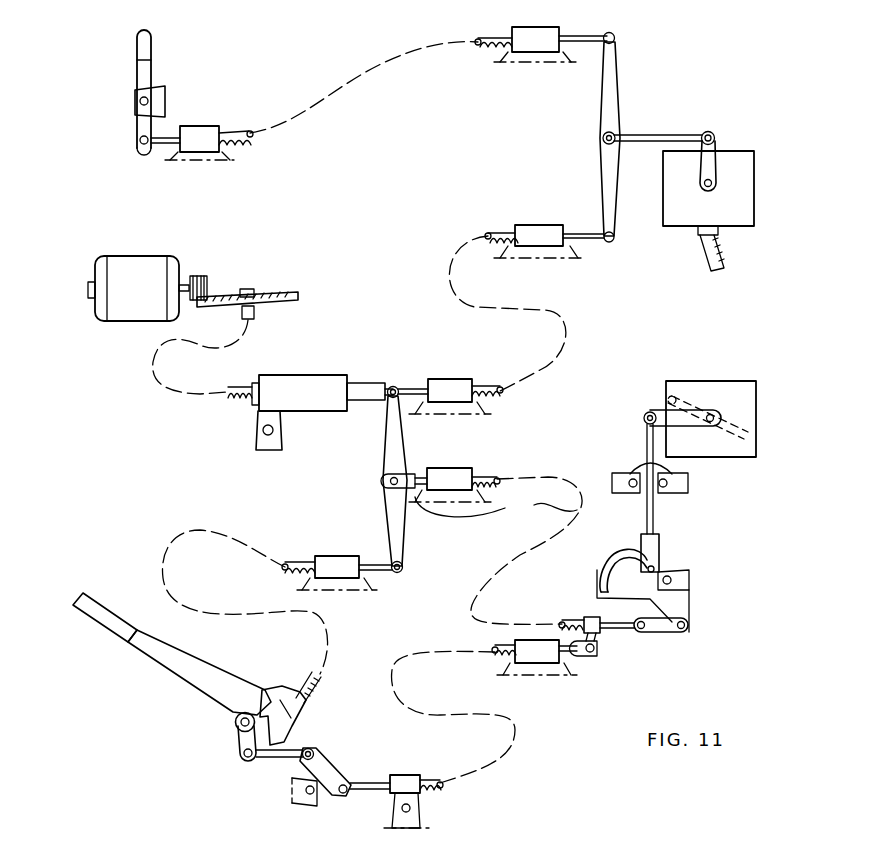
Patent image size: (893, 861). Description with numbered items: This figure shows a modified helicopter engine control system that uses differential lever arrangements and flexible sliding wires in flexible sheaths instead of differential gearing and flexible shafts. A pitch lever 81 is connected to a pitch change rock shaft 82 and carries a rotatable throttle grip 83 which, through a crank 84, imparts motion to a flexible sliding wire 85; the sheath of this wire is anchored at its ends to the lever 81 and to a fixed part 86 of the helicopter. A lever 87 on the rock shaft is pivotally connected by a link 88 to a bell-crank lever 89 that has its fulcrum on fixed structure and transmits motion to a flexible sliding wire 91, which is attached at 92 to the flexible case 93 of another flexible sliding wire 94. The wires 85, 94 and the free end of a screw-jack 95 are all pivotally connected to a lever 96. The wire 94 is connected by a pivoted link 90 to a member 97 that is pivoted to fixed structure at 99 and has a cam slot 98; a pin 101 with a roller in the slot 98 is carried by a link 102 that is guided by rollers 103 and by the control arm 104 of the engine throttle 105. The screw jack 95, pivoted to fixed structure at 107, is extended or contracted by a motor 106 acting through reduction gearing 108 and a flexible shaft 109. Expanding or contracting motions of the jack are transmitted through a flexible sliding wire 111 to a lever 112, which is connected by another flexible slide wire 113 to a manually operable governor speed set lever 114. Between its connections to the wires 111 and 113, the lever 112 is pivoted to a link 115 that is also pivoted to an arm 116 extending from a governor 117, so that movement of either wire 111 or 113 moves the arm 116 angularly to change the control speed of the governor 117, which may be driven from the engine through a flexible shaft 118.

The pitch lever 81 is at (175, 667).
The pitch change rock shaft 82 is at (236, 724).
The rotatable throttle grip 83 is at (108, 613).
The crank 84 is at (290, 741).
The flexible sliding wire 85 is at (380, 572).
The fixed part of the helicopter 86 is at (343, 583).
The lever 87 is at (240, 741).
The link 88 is at (272, 757).
The bell-crank lever 89 is at (318, 777).
The pivoted link 90 is at (665, 633).
The flexible sliding wire 91 is at (566, 659).
The attachment 92 is at (600, 640).
The flexible case 93 is at (488, 467).
The flexible sliding wire 94 is at (615, 624).
The screw-jack 95 is at (311, 382).
The lever 96 is at (386, 440).
The member 97 is at (680, 605).
The cam slot 98 is at (615, 557).
The pivot 99 is at (688, 580).
The pin 101 is at (660, 564).
The link 102 is at (653, 521).
The rollers 103 is at (678, 469).
The control arm of the engine throttle 104 is at (675, 417).
The engine throttle 105 is at (733, 422).
The motor 106 is at (142, 268).
The pivot 107 is at (262, 431).
The reduction gearing 108 is at (224, 291).
The flexible shaft 109 is at (150, 373).
The flexible sliding wire 111 is at (585, 241).
The lever 112 is at (614, 82).
The flexible slide wire 113 is at (150, 144).
The governor speed set lever 114 is at (140, 76).
The link 115 is at (676, 137).
The arm 116 is at (717, 180).
The governor 117 is at (682, 220).
The flexible shaft 118 is at (723, 268).